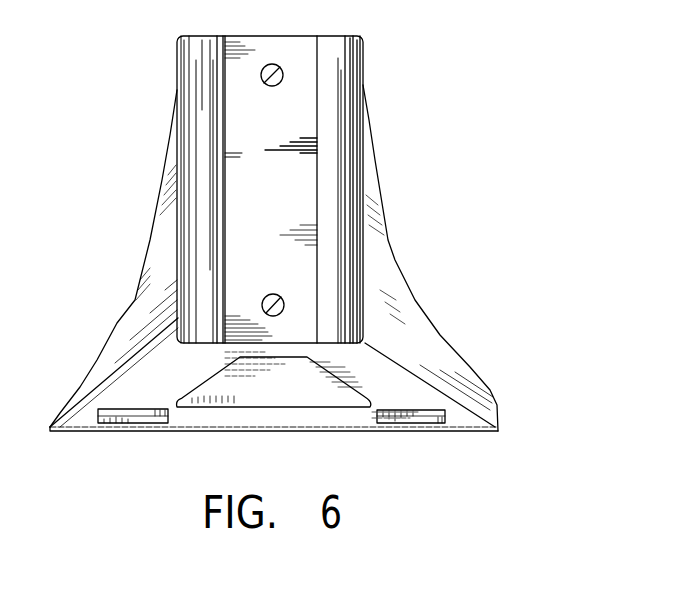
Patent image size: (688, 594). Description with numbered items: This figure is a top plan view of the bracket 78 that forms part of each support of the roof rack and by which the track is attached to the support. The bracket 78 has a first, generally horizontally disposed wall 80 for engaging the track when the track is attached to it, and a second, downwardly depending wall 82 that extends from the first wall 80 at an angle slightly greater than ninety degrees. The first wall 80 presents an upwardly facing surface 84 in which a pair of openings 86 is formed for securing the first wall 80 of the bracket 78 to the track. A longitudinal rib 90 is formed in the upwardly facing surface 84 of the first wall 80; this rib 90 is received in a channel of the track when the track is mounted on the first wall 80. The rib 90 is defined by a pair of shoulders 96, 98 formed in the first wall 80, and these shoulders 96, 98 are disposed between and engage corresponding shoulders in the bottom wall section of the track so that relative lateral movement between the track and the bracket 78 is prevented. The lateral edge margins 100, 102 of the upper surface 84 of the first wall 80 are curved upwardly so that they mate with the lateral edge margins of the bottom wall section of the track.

The bracket 78 is at (470, 368).
The first wall 80 is at (337, 130).
The second wall 82 is at (197, 427).
The upwardly facing surface 84 is at (202, 152).
The openings 86 is at (273, 64).
The longitudinal rib 90 is at (242, 87).
The shoulder 96 is at (223, 218).
The shoulder 98 is at (317, 197).
The lateral edge margin 100 is at (210, 307).
The lateral edge margin 102 is at (337, 82).